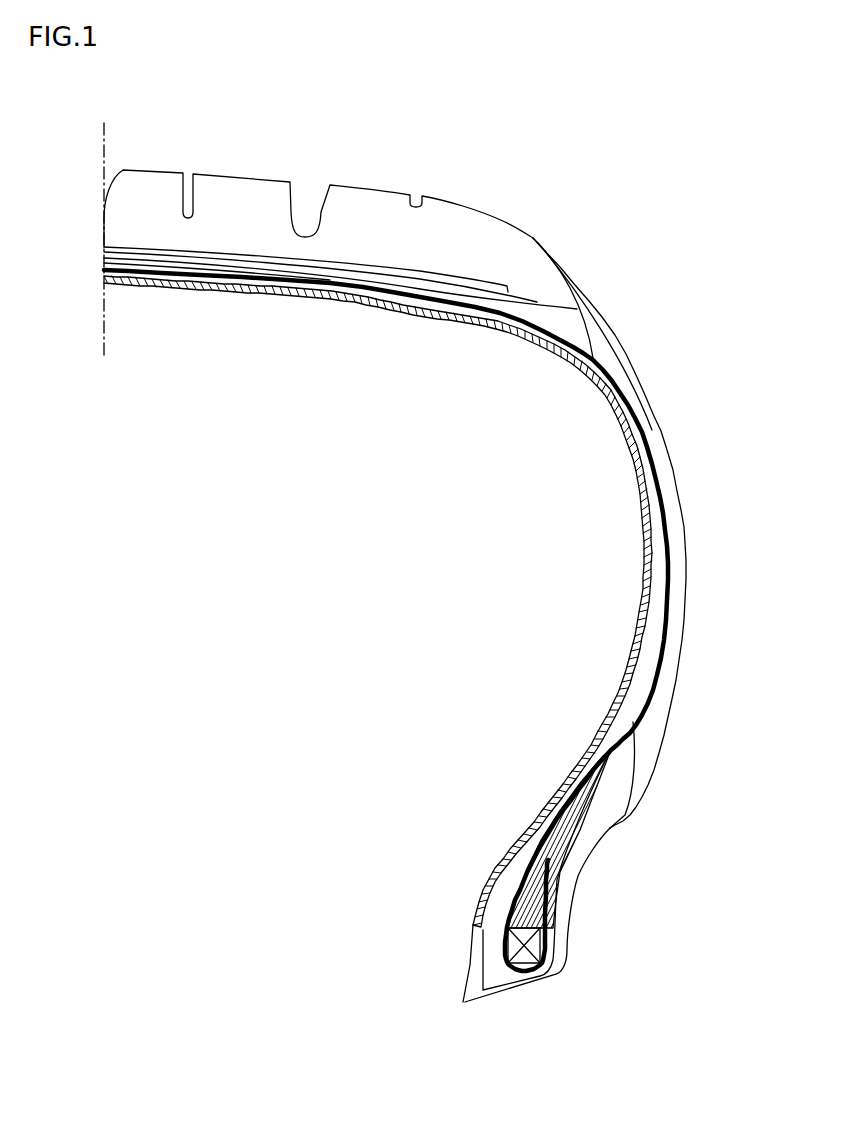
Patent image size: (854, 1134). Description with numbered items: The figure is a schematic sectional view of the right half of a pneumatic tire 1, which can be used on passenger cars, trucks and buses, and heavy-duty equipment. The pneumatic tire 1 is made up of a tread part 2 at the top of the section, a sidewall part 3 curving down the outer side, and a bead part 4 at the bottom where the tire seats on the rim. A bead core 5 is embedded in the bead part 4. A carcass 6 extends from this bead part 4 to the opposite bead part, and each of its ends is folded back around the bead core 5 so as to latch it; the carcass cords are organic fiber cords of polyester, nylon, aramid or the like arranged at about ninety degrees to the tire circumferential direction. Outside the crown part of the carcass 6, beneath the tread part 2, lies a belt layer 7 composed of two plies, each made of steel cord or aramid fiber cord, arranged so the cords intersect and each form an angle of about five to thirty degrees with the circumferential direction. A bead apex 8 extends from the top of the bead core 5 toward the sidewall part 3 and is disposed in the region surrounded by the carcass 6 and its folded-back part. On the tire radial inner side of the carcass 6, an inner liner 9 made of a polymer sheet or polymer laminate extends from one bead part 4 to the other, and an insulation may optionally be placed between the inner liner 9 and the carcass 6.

The pneumatic tire 1 is at (241, 163).
The tread part 2 is at (388, 186).
The sidewall part 3 is at (689, 517).
The bead part 4 is at (611, 839).
The bead core 5 is at (523, 962).
The carcass 6 is at (651, 677).
The belt layer 7 is at (100, 243).
The bead apex 8 is at (527, 867).
The inner liner 9 is at (617, 712).